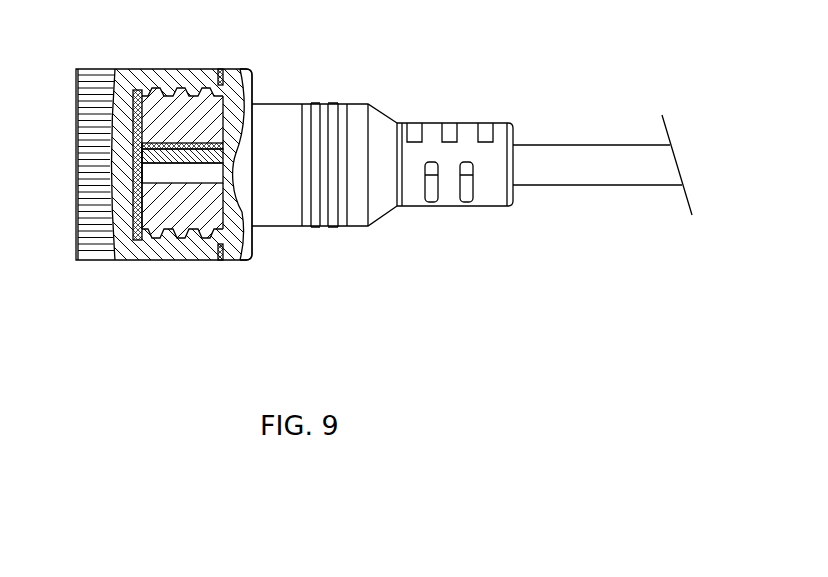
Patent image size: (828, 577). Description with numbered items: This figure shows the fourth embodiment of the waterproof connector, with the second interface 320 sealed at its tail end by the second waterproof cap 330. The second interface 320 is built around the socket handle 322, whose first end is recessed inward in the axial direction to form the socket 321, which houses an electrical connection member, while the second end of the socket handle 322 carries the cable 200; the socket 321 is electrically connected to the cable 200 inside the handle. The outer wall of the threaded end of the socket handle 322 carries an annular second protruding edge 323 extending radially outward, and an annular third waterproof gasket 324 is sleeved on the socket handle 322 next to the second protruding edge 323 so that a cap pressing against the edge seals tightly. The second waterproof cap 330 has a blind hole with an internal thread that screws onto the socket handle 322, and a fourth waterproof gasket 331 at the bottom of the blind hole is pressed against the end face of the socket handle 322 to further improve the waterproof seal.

The cable 200 is at (566, 185).
The second interface 320 is at (428, 272).
The socket 321 is at (228, 150).
The socket handle 322 is at (428, 123).
The second protruding edge 323 is at (235, 262).
The third waterproof gasket 324 is at (220, 256).
The second waterproof cap 330 is at (78, 56).
The fourth waterproof gasket 331 is at (131, 242).